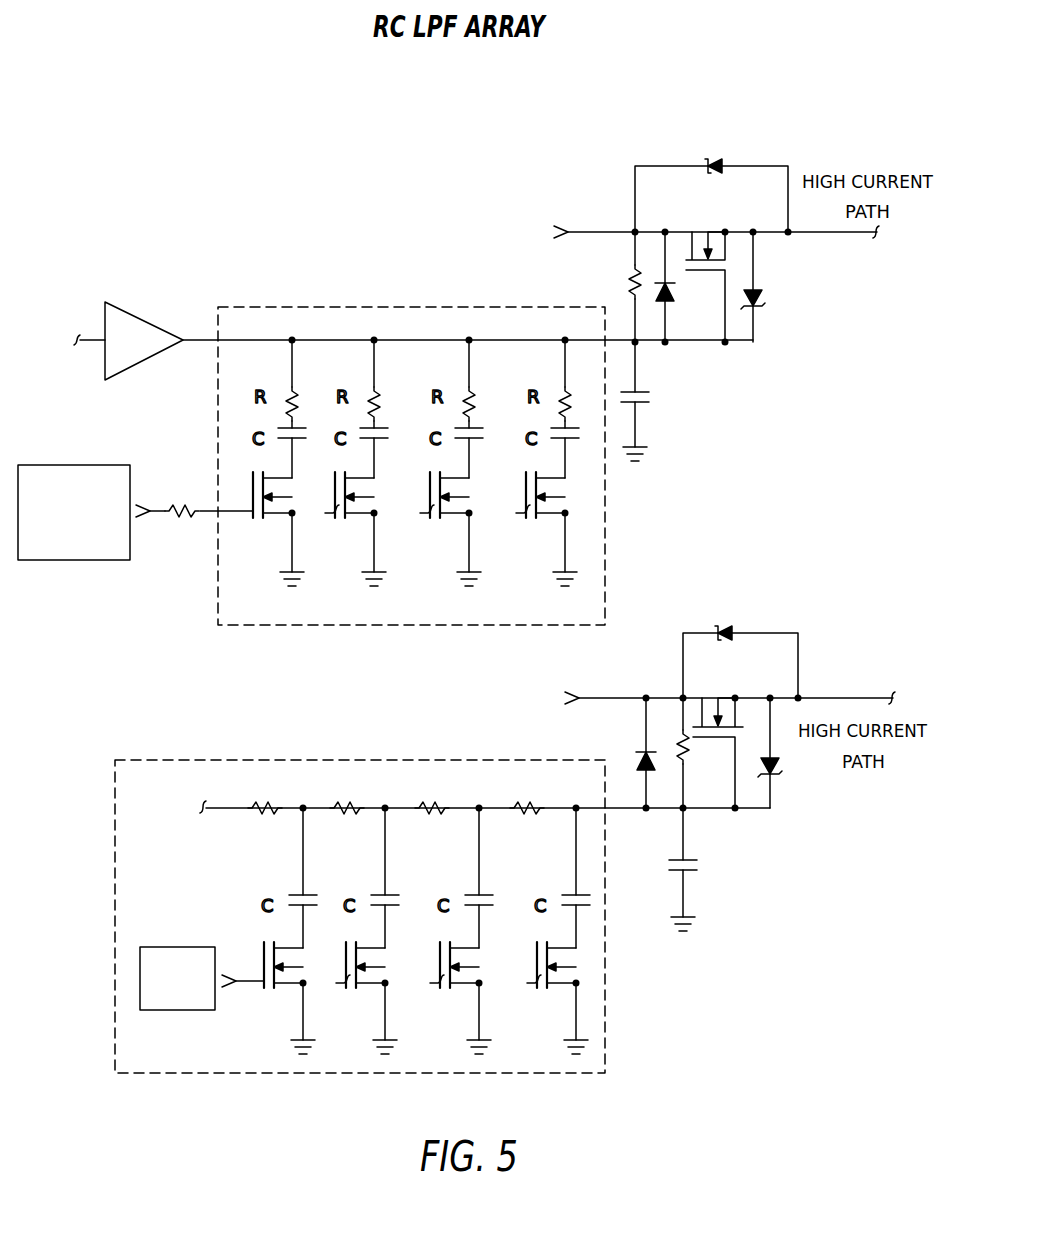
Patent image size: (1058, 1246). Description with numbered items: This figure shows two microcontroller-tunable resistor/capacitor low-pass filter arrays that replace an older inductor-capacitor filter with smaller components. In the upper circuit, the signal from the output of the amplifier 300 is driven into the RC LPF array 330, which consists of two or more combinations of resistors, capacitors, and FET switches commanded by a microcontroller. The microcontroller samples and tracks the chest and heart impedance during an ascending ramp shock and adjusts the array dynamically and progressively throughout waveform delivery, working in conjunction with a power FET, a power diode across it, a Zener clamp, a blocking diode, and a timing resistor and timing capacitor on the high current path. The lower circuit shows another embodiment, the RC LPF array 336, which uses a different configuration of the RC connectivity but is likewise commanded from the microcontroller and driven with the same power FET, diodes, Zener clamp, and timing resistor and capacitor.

The amplifier 300 is at (145, 320).
The RC LPF array 330 is at (372, 305).
The RC LPF array 336 is at (225, 760).